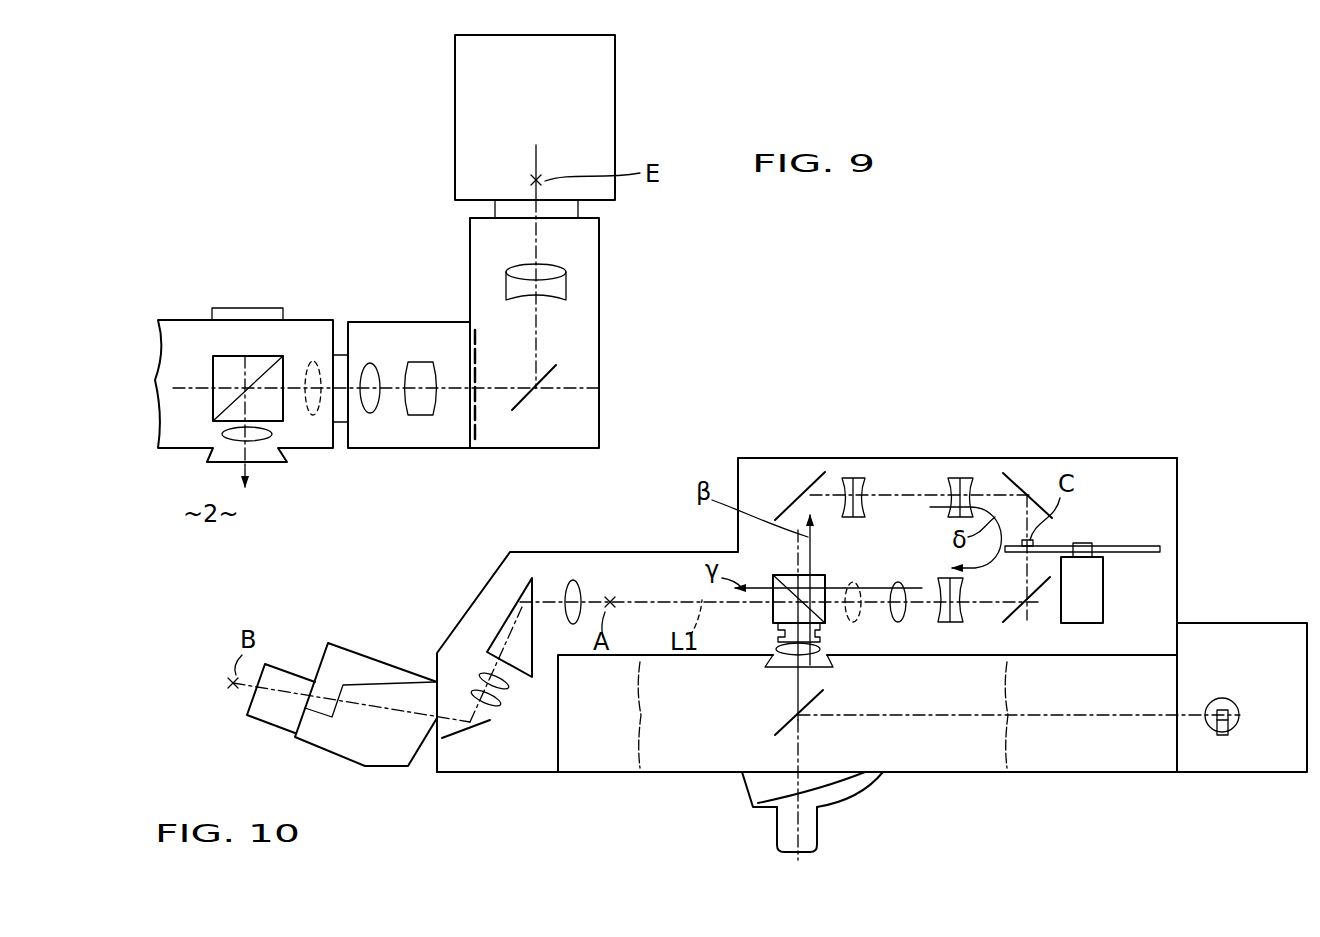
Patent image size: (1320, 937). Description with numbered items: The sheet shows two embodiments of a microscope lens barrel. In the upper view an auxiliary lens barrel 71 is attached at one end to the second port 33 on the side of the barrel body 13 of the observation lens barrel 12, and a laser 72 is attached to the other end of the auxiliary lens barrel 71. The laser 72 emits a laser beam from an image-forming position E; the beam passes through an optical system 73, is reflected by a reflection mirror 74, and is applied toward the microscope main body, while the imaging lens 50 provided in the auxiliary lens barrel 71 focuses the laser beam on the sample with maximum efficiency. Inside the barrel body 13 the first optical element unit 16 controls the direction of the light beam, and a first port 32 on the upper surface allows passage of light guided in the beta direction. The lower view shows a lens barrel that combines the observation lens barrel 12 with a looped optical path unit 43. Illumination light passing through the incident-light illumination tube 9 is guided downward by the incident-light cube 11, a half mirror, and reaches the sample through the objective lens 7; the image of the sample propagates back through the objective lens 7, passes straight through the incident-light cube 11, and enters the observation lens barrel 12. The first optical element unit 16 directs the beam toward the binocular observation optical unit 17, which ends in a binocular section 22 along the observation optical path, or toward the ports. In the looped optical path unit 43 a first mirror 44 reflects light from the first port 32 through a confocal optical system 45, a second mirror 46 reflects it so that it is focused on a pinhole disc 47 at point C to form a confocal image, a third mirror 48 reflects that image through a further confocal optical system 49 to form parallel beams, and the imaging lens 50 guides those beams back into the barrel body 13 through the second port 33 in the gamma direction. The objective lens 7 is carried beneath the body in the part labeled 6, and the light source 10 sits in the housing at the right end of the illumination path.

In FIG. 9, the laser 72 is at (603, 81).
In FIG. 9, the auxiliary lens barrel 71 is at (619, 307).
In FIG. 9, the optical system 73 is at (505, 288).
In FIG. 9, the reflection mirror 74 is at (556, 377).
In FIG. 9, the barrel body 13 is at (222, 342).
In FIG. 10, the barrel body 13 is at (628, 567).
In FIG. 9, the first port 32 is at (247, 308).
In FIG. 9, the second port 33 is at (340, 355).
In FIG. 9, the first optical element unit 16 is at (205, 405).
In FIG. 10, the first optical element unit 16 is at (826, 578).
In FIG. 9, the imaging lens 50 is at (370, 413).
In FIG. 10, the imaging lens 50 is at (897, 622).
In FIG. 10, the observation lens barrel 12 is at (577, 540).
In FIG. 10, the looped optical path unit 43 is at (1217, 510).
In FIG. 10, the incident-light illumination tube 9 is at (1112, 750).
In FIG. 10, the binocular observation optical unit 17 is at (492, 585).
In FIG. 10, the binocular section 22 is at (353, 665).
In FIG. 10, the first mirror 44 is at (808, 485).
In FIG. 10, the confocal optical system 45 is at (952, 478).
In FIG. 10, the second mirror 46 is at (1015, 478).
In FIG. 10, the pinhole disc 47 is at (1055, 545).
In FIG. 10, the third mirror 48 is at (1020, 615).
In FIG. 10, the confocal optical system 49 is at (955, 625).
In FIG. 10, the incident-light cube 11 is at (790, 720).
In FIG. 10, the objective lens 6 is at (760, 795).
In FIG. 10, the objective lens 7 is at (812, 826).
In FIG. 10, the light source 10 is at (1238, 727).